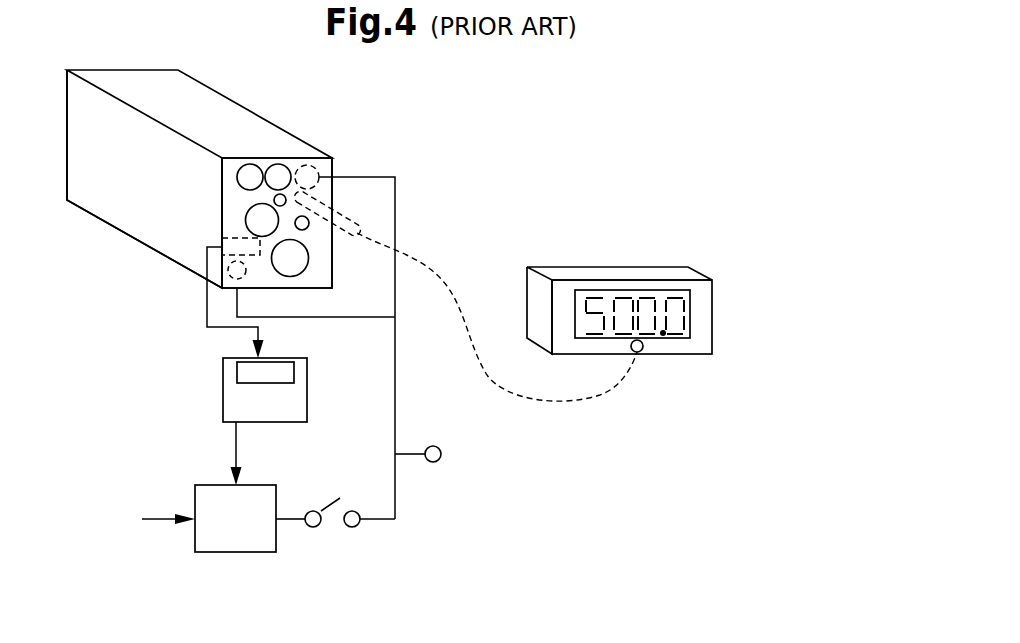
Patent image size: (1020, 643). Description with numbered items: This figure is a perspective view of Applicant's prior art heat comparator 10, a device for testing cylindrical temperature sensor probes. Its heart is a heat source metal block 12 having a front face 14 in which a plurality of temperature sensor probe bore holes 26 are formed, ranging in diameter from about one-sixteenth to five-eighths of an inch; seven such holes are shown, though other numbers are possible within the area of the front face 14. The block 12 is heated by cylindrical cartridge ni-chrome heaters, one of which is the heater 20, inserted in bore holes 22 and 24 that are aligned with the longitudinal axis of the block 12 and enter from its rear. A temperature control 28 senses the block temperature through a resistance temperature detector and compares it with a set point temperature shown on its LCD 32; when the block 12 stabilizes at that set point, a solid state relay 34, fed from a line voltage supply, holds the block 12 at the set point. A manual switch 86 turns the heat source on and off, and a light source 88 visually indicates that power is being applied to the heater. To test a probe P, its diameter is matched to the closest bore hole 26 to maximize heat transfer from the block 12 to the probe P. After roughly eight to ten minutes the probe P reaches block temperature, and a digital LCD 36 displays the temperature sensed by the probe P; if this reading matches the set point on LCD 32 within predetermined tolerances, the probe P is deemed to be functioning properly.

The heat comparator 10 is at (220, 67).
The heat source metal block 12 is at (95, 170).
The front face 14 is at (228, 168).
The cylindrical cartridge ni-chrome heater 20 is at (222, 239).
The bore hole 22 is at (318, 168).
The bore hole 24 is at (240, 270).
The temperature sensor probe bore holes 26 is at (319, 238).
The temperature sensor probe P is at (333, 213).
The temperature control 28 is at (300, 402).
The LCD 32 is at (294, 372).
The solid state relay 34 is at (247, 553).
The digital LCD 36 is at (580, 274).
The manual switch 86 is at (330, 502).
The light source 88 is at (440, 460).